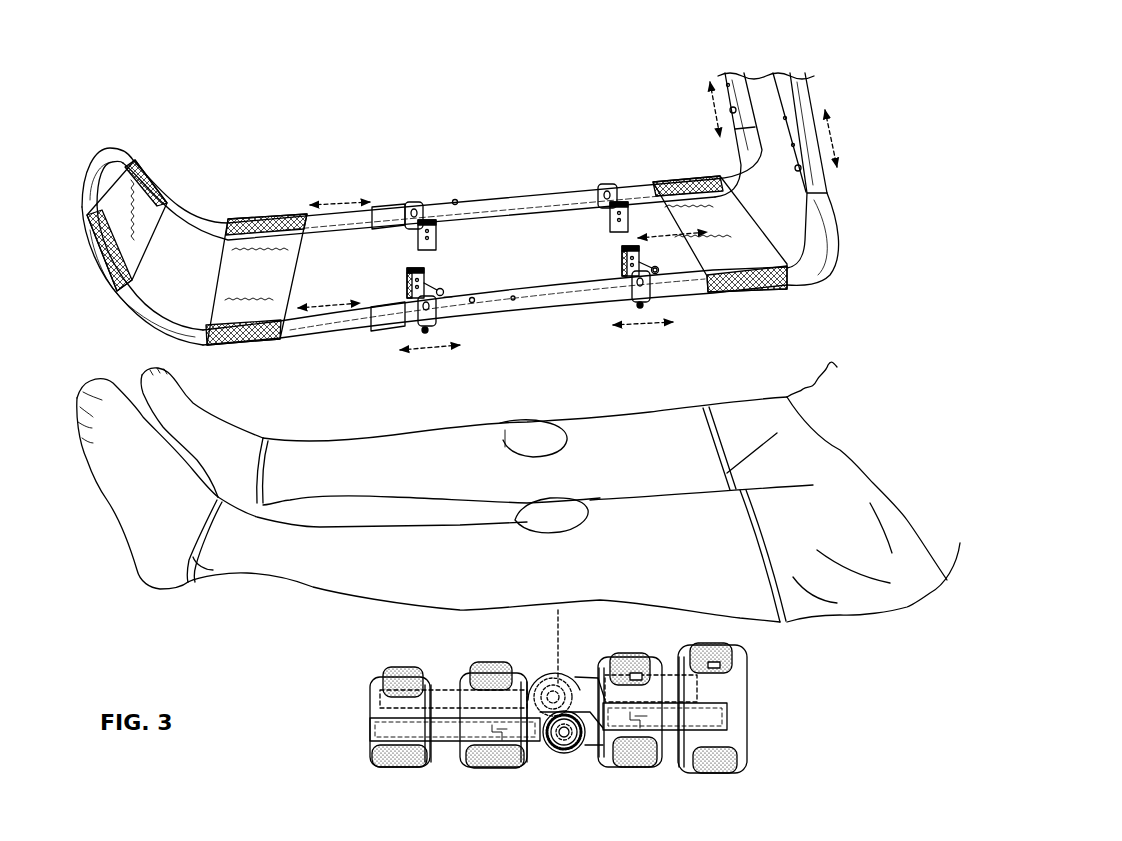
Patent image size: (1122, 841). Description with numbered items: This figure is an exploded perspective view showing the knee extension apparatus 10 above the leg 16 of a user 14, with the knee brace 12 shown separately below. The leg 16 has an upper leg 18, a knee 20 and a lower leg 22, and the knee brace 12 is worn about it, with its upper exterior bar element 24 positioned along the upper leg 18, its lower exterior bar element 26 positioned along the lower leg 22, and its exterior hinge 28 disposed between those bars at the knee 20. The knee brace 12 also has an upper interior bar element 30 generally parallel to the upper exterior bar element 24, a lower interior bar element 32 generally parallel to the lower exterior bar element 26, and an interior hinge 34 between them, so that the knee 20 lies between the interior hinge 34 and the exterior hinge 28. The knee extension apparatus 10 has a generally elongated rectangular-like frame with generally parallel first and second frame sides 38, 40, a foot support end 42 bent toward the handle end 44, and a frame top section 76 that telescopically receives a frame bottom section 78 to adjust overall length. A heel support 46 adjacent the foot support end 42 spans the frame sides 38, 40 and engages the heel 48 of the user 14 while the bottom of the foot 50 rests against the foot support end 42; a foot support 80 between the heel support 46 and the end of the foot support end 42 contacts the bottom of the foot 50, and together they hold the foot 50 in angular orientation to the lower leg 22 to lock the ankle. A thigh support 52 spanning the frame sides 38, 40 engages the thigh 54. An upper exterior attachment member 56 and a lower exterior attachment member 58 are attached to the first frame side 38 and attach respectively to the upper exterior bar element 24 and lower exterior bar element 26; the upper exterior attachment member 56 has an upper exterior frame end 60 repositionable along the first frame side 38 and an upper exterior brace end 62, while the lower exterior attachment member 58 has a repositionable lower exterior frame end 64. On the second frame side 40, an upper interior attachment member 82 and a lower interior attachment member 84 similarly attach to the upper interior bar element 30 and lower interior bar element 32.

The knee extension apparatus 10 is at (268, 152).
The knee brace 12 is at (337, 672).
The user 14 is at (833, 368).
The leg 16 is at (637, 530).
The upper leg 18 is at (690, 520).
The knee 20 is at (540, 515).
The lower leg 22 is at (417, 540).
The upper exterior bar element 24 is at (668, 735).
The lower exterior bar element 26 is at (447, 745).
The exterior hinge 28 is at (562, 752).
The upper interior bar element 30 is at (400, 667).
The lower interior bar element 32 is at (450, 690).
The interior hinge 34 is at (550, 672).
The first frame side 38 is at (546, 290).
The second frame side 40 is at (517, 196).
The foot support end 42 is at (92, 186).
The handle end 44 is at (790, 92).
The heel support 46 is at (245, 279).
The heel 48 is at (137, 572).
The foot 50 is at (130, 496).
The thigh support 52 is at (719, 232).
The thigh 54 is at (715, 510).
The upper exterior attachment member 56 is at (620, 256).
The lower exterior attachment member 58 is at (405, 280).
The upper exterior frame end 60 is at (438, 288).
The upper exterior brace end 62 is at (652, 266).
The lower exterior frame end 64 is at (432, 318).
The frame top section 76 is at (500, 308).
The frame bottom section 78 is at (310, 332).
The foot support 80 is at (118, 222).
The upper interior attachment member 82 is at (609, 223).
The lower interior attachment member 84 is at (417, 245).